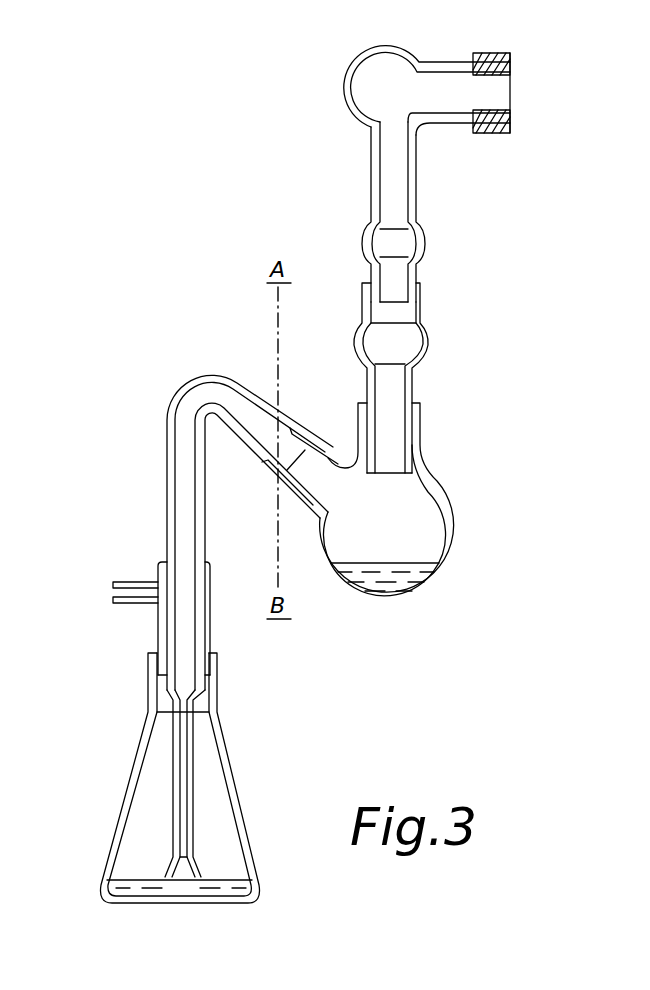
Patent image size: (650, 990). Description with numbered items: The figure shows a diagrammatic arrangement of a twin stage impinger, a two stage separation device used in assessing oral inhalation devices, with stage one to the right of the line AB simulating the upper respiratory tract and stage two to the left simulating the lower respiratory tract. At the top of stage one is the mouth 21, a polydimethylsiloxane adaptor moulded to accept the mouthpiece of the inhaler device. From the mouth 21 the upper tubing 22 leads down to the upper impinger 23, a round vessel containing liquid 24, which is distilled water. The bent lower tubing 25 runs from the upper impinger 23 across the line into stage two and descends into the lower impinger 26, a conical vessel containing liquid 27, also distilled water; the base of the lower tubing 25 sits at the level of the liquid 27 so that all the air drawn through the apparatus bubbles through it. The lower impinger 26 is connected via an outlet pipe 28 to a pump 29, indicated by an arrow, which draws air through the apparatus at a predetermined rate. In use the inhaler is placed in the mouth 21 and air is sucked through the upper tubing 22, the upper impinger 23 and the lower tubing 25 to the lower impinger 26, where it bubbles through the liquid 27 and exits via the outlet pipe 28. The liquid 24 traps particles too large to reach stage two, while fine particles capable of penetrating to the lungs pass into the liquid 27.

The mouth 21 is at (512, 53).
The upper tubing 22 is at (418, 266).
The upper impinger 23 is at (447, 505).
The liquid 24 is at (425, 580).
The lower tubing 25 is at (168, 428).
The lower impinger 26 is at (246, 810).
The liquid 27 is at (126, 880).
The outlet pipe 28 is at (136, 605).
The pump 29 is at (104, 592).